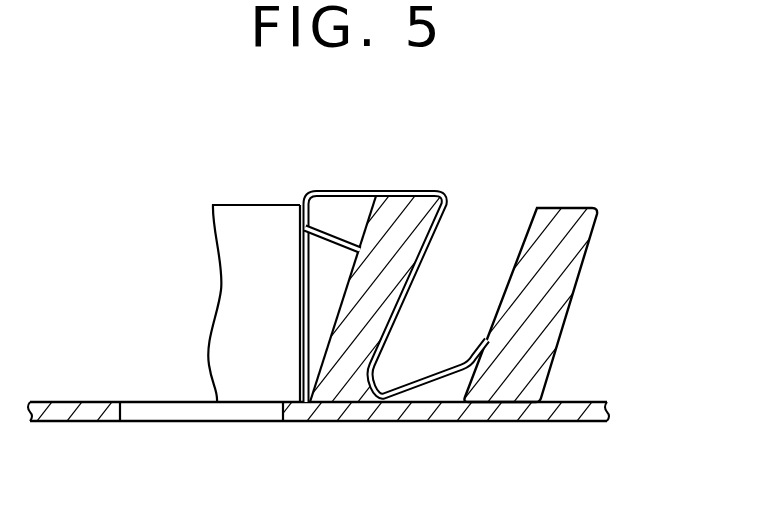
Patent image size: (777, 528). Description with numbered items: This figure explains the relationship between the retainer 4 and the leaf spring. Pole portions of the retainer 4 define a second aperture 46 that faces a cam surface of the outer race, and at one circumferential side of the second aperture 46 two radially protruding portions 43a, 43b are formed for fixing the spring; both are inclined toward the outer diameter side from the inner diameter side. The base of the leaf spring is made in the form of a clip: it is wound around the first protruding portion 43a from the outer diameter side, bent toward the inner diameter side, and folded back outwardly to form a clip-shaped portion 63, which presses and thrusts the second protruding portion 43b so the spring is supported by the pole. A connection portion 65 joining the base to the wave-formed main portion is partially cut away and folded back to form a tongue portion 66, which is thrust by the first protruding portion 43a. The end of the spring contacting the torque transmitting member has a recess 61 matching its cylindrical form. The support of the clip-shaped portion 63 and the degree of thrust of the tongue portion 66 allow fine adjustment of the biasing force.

The retainer 4 is at (558, 375).
The second aperture 46 is at (182, 410).
The recess 61 is at (237, 278).
The first protruding portion 43a is at (425, 212).
The second protruding portion 43b is at (573, 262).
The connection portion 65 is at (377, 189).
The clip-shaped portion 63 is at (428, 388).
The tongue portion 66 is at (331, 234).